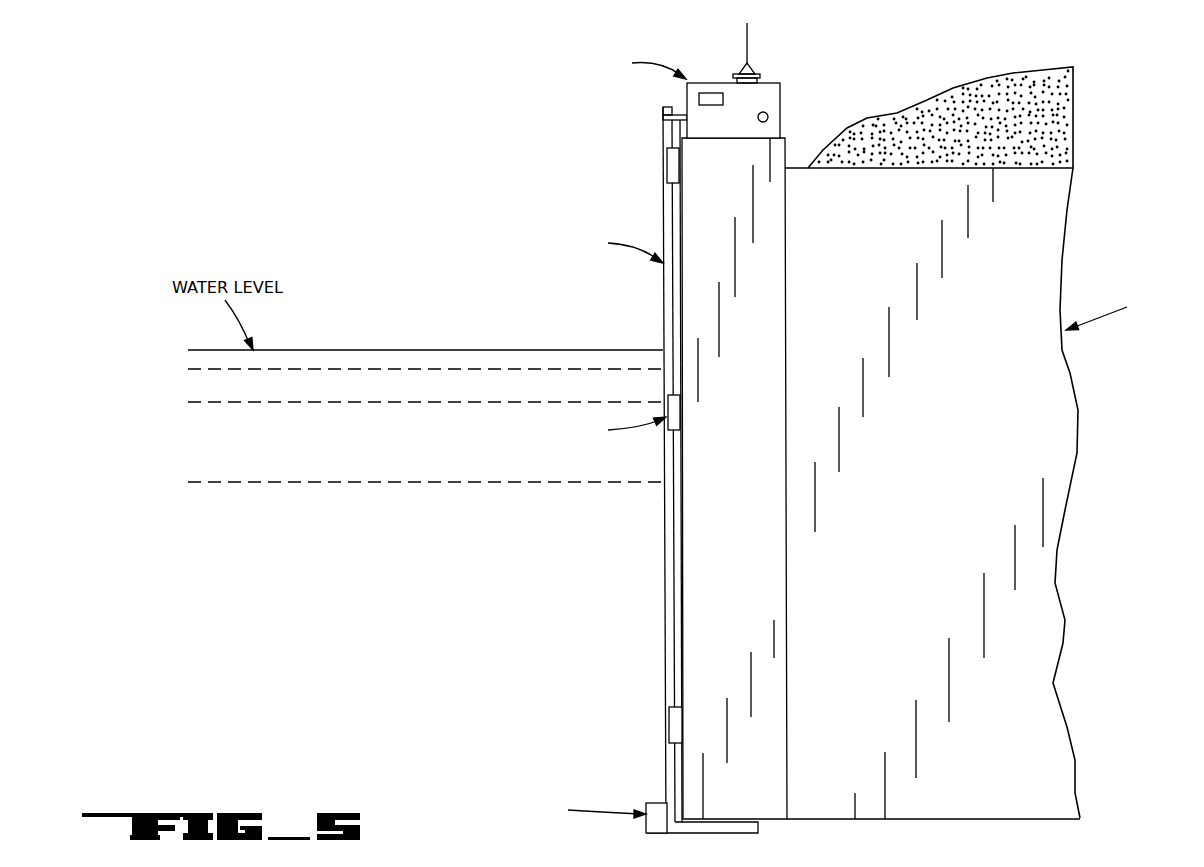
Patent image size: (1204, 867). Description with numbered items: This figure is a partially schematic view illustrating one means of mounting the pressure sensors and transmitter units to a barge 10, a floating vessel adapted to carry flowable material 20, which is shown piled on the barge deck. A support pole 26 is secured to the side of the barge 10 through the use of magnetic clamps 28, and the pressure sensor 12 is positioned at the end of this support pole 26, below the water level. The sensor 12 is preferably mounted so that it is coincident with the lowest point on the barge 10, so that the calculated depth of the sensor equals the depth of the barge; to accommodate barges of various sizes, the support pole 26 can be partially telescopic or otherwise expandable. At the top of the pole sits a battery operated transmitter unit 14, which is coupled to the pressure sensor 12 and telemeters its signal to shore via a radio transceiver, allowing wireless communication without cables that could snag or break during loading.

The barge 10 is at (1077, 378).
The pressure sensor 12 is at (655, 803).
The transmitter unit 14 is at (762, 90).
The flowable material 20 is at (1000, 75).
The support pole 26 is at (667, 278).
The magnetic clamps 28 is at (667, 427).